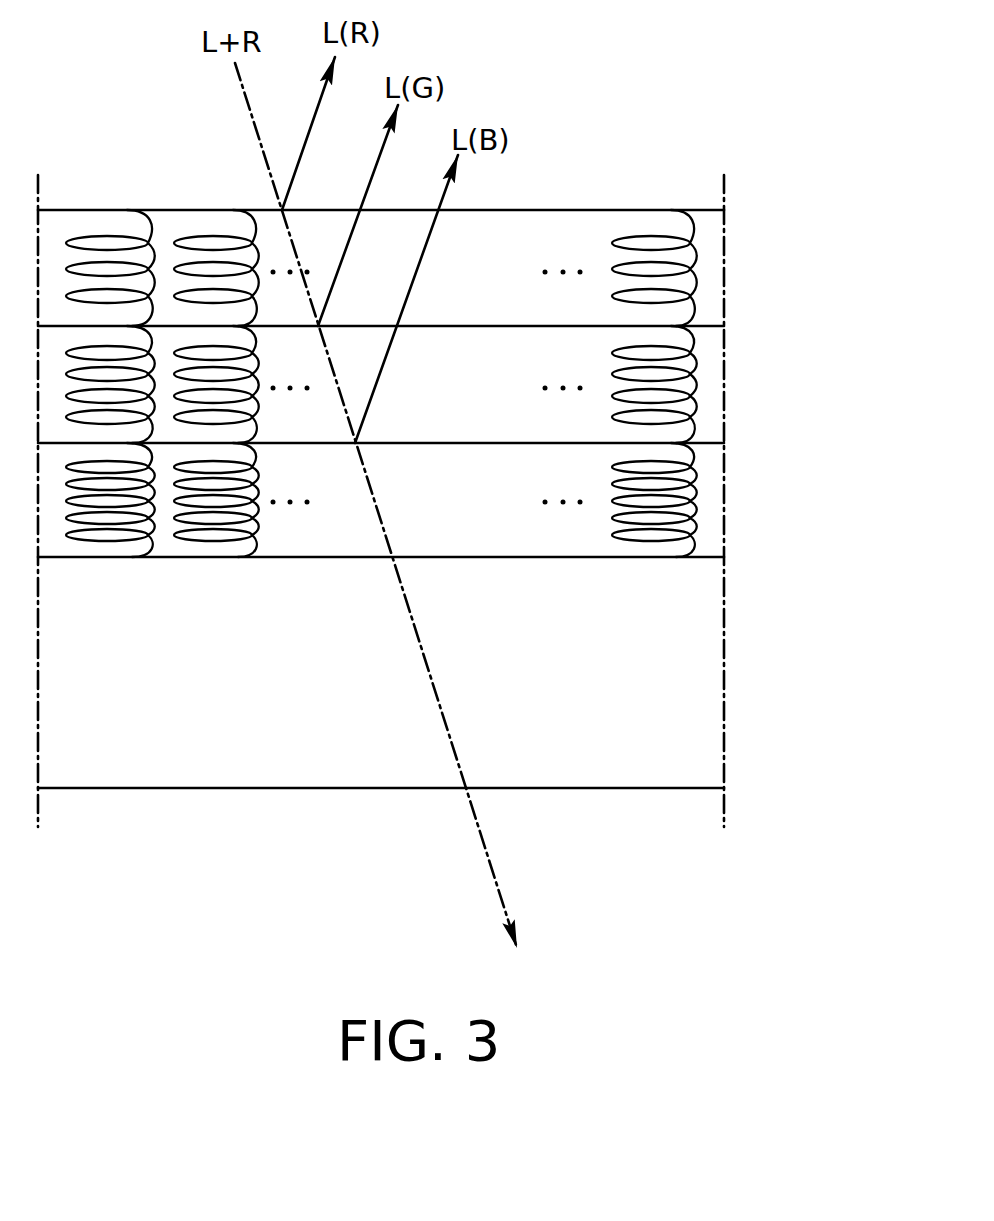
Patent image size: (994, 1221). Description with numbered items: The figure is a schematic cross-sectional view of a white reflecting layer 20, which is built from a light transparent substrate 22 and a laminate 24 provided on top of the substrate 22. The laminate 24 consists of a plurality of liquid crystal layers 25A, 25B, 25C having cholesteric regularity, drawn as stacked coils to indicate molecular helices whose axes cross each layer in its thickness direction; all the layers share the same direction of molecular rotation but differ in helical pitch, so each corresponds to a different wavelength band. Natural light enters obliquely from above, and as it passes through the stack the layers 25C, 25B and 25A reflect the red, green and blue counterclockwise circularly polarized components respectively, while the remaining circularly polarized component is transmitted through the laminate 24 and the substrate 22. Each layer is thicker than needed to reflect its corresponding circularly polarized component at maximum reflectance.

The white reflecting layer 20 is at (623, 172).
The light transparent substrate 22 is at (710, 692).
The laminate 24 is at (481, 383).
The liquid crystal layer 25A is at (436, 500).
The liquid crystal layer 25B is at (712, 384).
The liquid crystal layer 25C is at (712, 287).